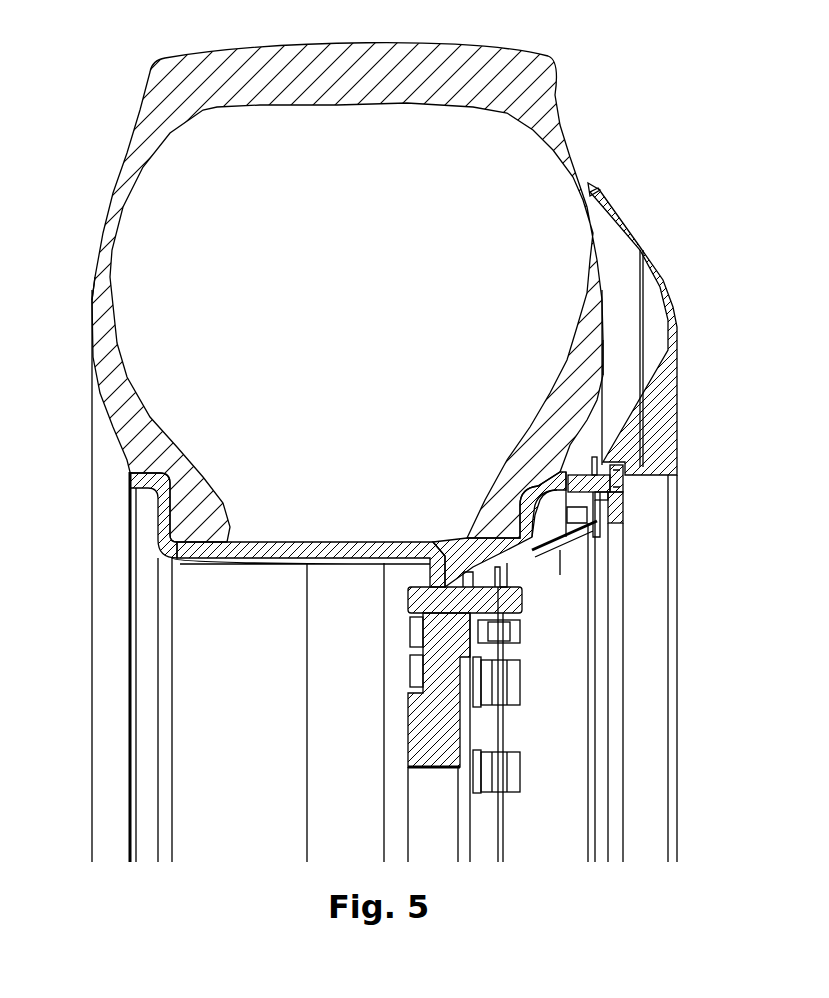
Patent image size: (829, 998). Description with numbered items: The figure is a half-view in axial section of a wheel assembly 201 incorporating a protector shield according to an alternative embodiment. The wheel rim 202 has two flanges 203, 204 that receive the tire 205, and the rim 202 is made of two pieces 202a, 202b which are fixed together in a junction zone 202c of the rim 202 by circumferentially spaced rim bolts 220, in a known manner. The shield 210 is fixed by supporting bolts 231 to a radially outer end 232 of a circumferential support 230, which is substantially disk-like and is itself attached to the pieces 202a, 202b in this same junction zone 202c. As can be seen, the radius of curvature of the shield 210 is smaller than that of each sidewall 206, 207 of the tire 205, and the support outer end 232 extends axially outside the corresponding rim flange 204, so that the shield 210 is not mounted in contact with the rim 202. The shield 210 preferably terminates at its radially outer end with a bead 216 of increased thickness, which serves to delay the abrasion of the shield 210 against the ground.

The wheel assembly 201 is at (282, 597).
The wheel rim 202 is at (357, 568).
The first rim piece 202a is at (310, 543).
The second rim piece 202b is at (458, 543).
The junction zone 202c is at (400, 707).
The rim flange 203 is at (130, 472).
The rim flange 204 is at (547, 480).
The tire 205 is at (170, 54).
The sidewall 206 is at (118, 273).
The sidewall 207 is at (587, 278).
The shield 210 is at (643, 237).
The bead 216 is at (593, 183).
The rim bolts 220 is at (522, 602).
The circumferential support 230 is at (548, 550).
The supporting bolts 231 is at (627, 487).
The radially outer end 232 is at (593, 460).